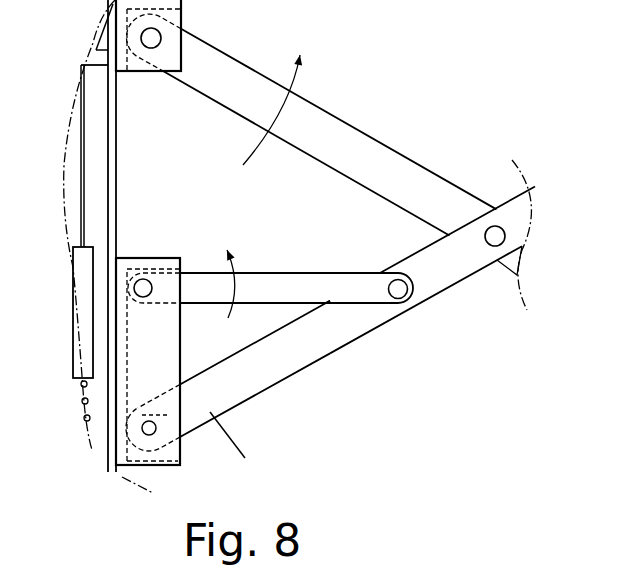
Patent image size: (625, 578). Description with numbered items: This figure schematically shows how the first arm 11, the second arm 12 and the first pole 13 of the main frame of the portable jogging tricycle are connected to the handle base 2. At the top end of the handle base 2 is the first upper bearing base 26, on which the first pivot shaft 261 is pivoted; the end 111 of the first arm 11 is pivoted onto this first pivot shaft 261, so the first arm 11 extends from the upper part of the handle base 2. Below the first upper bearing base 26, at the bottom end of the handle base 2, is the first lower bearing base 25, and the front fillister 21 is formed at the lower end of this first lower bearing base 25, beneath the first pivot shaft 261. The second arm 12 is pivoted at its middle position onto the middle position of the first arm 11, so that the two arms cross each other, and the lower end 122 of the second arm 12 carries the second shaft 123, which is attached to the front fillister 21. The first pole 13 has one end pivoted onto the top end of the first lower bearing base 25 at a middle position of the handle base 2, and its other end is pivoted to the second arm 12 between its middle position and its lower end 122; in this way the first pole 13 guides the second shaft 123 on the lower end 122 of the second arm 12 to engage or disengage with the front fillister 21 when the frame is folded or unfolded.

The handle base 2 is at (97, 198).
The first arm 11 is at (311, 124).
The end of the first arm 111 is at (198, 72).
The second arm 12 is at (298, 329).
The end of the second arm 122 is at (220, 393).
The second shaft 123 is at (142, 428).
The first pole 13 is at (267, 283).
The front fillister 21 is at (148, 455).
The first lower bearing base 25 is at (147, 258).
The first upper bearing base 26 is at (183, 1).
The first pivot shaft 261 is at (148, 44).